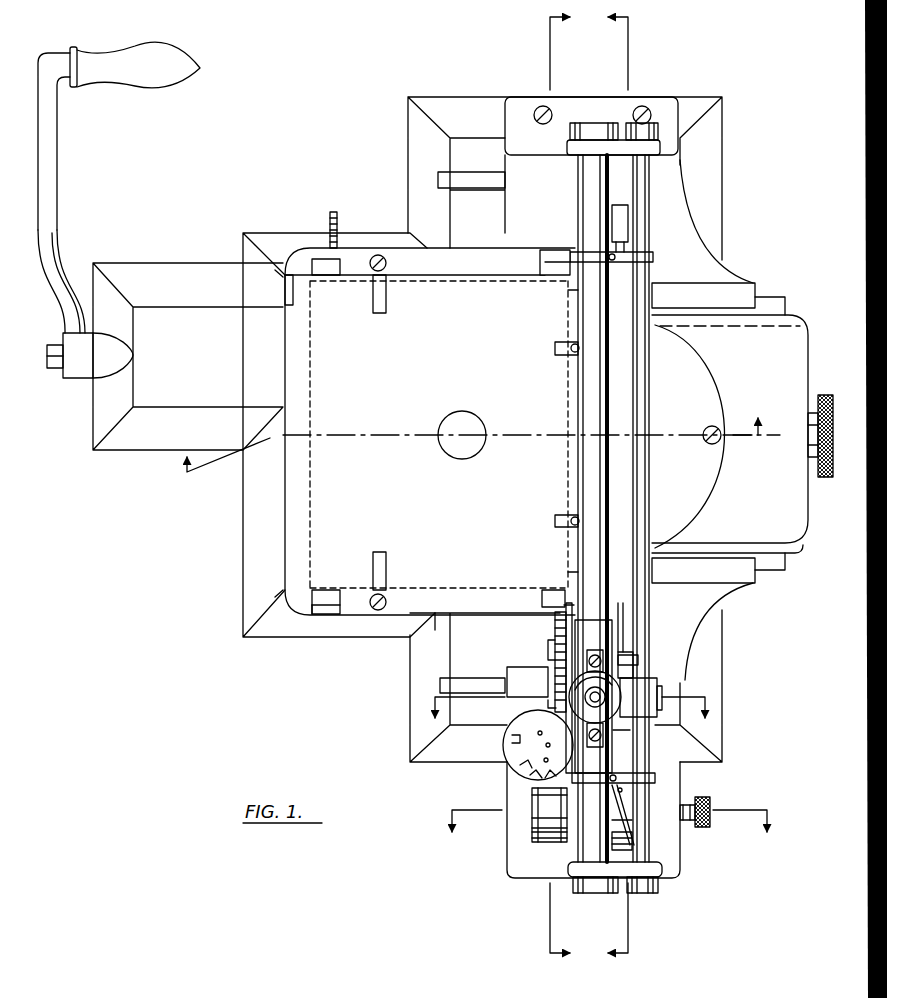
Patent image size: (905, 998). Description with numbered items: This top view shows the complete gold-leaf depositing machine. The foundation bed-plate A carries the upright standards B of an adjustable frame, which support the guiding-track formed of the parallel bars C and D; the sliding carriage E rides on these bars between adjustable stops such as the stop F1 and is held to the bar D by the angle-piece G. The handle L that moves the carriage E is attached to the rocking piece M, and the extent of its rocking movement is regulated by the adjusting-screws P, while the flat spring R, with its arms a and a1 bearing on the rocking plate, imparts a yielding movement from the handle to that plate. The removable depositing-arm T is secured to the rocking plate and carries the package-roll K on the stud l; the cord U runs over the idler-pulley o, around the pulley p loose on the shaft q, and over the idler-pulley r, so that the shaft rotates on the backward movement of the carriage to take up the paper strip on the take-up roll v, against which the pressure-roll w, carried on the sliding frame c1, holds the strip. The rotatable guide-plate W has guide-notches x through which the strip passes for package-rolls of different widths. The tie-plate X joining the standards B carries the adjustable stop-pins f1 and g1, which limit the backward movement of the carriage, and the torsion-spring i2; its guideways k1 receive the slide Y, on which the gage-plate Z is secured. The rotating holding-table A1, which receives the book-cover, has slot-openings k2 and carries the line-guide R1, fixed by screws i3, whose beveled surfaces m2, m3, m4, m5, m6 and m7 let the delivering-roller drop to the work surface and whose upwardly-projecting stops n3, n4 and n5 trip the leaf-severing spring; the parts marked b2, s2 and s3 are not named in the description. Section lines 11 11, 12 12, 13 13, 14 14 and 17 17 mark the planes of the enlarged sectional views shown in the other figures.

The arm of spring R a1 is at (137, 72).
The section line 11 11 is at (541, 486).
The section line 12 12 is at (635, 486).
The section line 13 13 is at (469, 448).
The section line 14 14 is at (568, 717).
The section line 17 17 is at (610, 817).
The foundation bed-plate A is at (418, 157).
The rotating holding-table A1 is at (343, 497).
The upright standards B is at (512, 192).
The parallel bar of guiding-track C is at (598, 385).
The parallel bar of guiding-track D is at (642, 385).
The sliding carriage E is at (597, 645).
The adjustable stop F1 is at (653, 258).
The angle-piece G is at (690, 680).
The package-roll K is at (547, 708).
The handle L is at (633, 674).
The rocking piece M is at (613, 737).
The adjusting-screws P is at (590, 672).
The flat spring R is at (604, 656).
The line-guide R1 is at (462, 608).
The depositing-arm T is at (554, 668).
The cord U is at (633, 822).
The rotatable guide-plate W is at (514, 742).
The tie-plate X is at (693, 234).
The slide Y is at (795, 336).
The gage-plate Z is at (668, 468).
The arm of spring R a is at (572, 612).
The screw b2 is at (337, 226).
The sliding frame c1 is at (620, 630).
The adjustable stop-pin f1 is at (621, 693).
The adjustable stop-pin g1 is at (640, 663).
The torsion-spring i2 is at (470, 183).
The screws i3 is at (382, 256).
The guideways k1 is at (757, 301).
The slot-openings k2 is at (380, 313).
The stud l is at (550, 645).
The beveled surface m2 is at (560, 597).
The beveled surface m3 is at (570, 578).
The beveled surface m4 is at (572, 297).
The beveled surface m5 is at (563, 267).
The beveled surface m6 is at (328, 270).
The beveled surface m7 is at (326, 600).
The upwardly-projecting stop n3 is at (330, 616).
The upwardly-projecting stop n4 is at (284, 292).
The upwardly-projecting stop n5 is at (556, 262).
The idler-pulley o is at (618, 790).
The pulley p is at (632, 812).
The shaft q is at (632, 832).
The idler-pulley r is at (630, 845).
The stud s2 is at (436, 617).
The stud s3 is at (281, 278).
The take-up roll v is at (545, 818).
The pressure-roll w is at (535, 842).
The guide-notches x is at (532, 772).